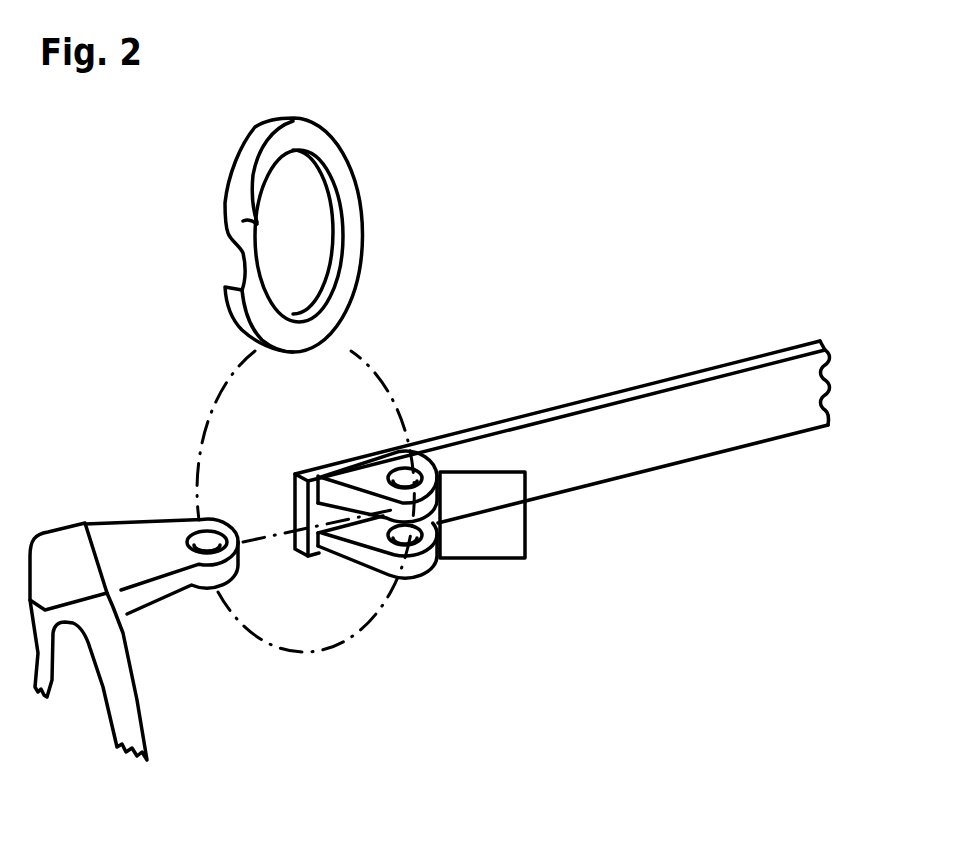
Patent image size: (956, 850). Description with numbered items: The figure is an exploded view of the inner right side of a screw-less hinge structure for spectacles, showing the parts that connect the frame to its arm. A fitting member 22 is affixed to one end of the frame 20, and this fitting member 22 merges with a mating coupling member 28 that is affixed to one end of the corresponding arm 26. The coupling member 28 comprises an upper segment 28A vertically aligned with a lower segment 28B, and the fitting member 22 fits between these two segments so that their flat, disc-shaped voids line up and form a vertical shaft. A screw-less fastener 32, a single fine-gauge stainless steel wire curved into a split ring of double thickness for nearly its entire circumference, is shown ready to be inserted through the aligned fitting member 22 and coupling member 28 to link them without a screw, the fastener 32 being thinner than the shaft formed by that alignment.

The frame 20 is at (120, 702).
The fitting member 22 is at (163, 540).
The arm 26 is at (725, 428).
The coupling member 28 is at (525, 517).
The upper segment 28A is at (421, 458).
The lower segment 28B is at (423, 560).
The fastener 32 is at (228, 231).